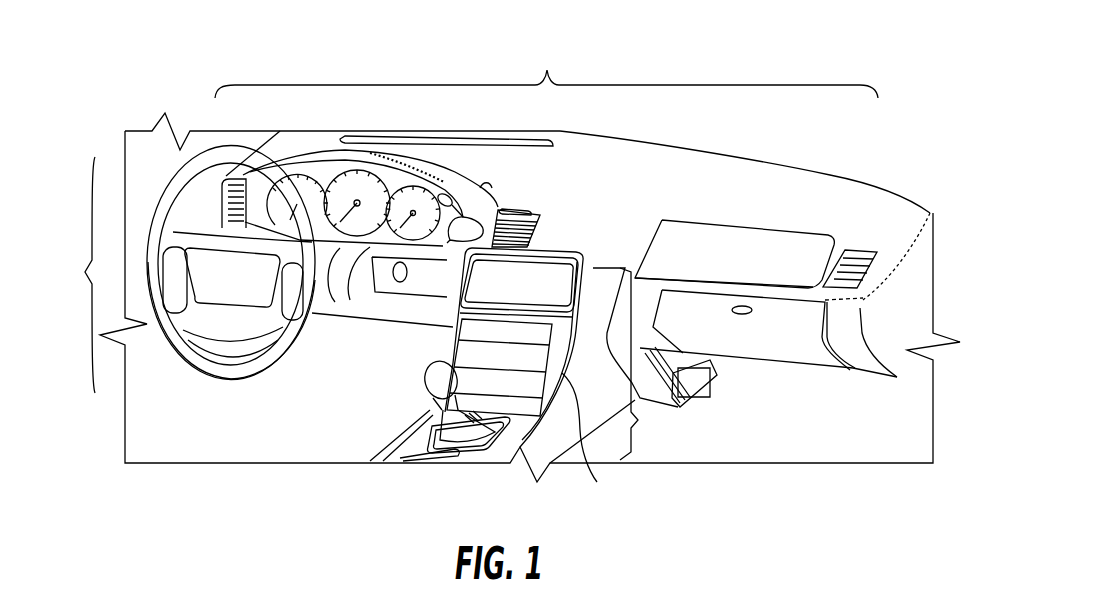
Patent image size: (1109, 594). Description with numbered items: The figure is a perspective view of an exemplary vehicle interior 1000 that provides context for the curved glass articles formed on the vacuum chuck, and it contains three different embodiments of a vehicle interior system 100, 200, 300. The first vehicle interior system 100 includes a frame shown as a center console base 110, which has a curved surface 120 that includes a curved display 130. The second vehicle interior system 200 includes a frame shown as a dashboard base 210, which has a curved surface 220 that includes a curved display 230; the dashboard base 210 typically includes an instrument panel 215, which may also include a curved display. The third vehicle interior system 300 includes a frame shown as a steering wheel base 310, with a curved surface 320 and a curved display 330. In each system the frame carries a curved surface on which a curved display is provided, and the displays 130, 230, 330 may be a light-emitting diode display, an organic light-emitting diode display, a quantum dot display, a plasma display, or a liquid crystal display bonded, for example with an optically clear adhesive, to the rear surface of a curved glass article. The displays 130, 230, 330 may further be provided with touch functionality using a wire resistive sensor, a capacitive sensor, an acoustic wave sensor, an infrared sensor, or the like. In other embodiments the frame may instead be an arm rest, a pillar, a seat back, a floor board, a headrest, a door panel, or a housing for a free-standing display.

The vehicle interior 1000 is at (793, 52).
The vehicle interior system 200 is at (572, 126).
The dashboard base 210 is at (640, 153).
The instrument panel 215 is at (323, 158).
The curved surface 220 is at (760, 153).
The curved display 230 is at (803, 240).
The vehicle interior system 300 is at (179, 270).
The steering wheel base 310 is at (230, 320).
The curved surface 320 is at (180, 228).
The curved display 330 is at (202, 320).
The curved display 130 is at (557, 263).
The curved surface 120 is at (450, 342).
The vehicle interior system 100 is at (668, 364).
The center console base 110 is at (597, 482).